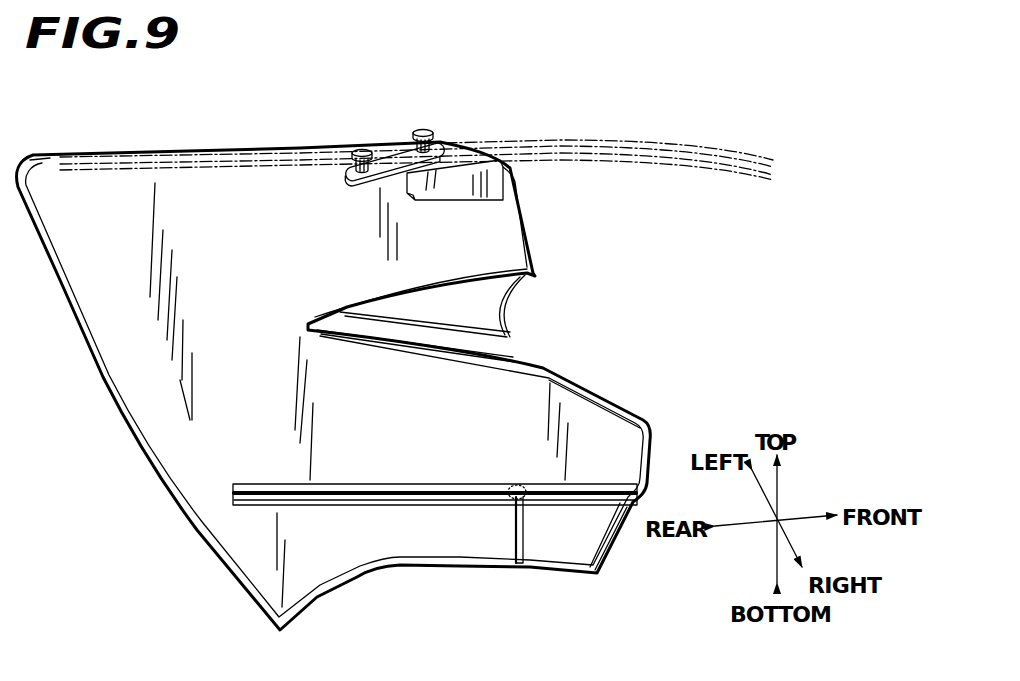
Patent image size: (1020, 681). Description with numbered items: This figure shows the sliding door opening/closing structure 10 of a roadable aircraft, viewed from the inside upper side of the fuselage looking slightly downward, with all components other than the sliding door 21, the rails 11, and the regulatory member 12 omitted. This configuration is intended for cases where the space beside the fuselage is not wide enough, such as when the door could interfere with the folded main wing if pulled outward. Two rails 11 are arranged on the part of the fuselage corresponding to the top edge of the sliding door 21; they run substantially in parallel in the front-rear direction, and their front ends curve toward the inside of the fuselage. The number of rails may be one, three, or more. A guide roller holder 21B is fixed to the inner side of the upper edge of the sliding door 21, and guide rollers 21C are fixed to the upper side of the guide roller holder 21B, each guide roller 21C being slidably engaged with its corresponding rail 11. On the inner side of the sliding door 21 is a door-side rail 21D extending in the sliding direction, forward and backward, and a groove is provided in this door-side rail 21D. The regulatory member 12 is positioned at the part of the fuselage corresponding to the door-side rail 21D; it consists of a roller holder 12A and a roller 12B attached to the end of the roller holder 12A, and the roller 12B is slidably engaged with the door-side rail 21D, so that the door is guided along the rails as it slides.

The sliding door opening/closing structure 10 is at (163, 132).
The rails 11 is at (622, 157).
The regulatory member 12 is at (531, 564).
The roller holder 12A is at (519, 520).
The roller 12B is at (512, 500).
The sliding door 21 is at (153, 378).
The guide roller holder 21B is at (492, 183).
The guide rollers 21C is at (362, 149).
The door-side rail 21D is at (423, 502).